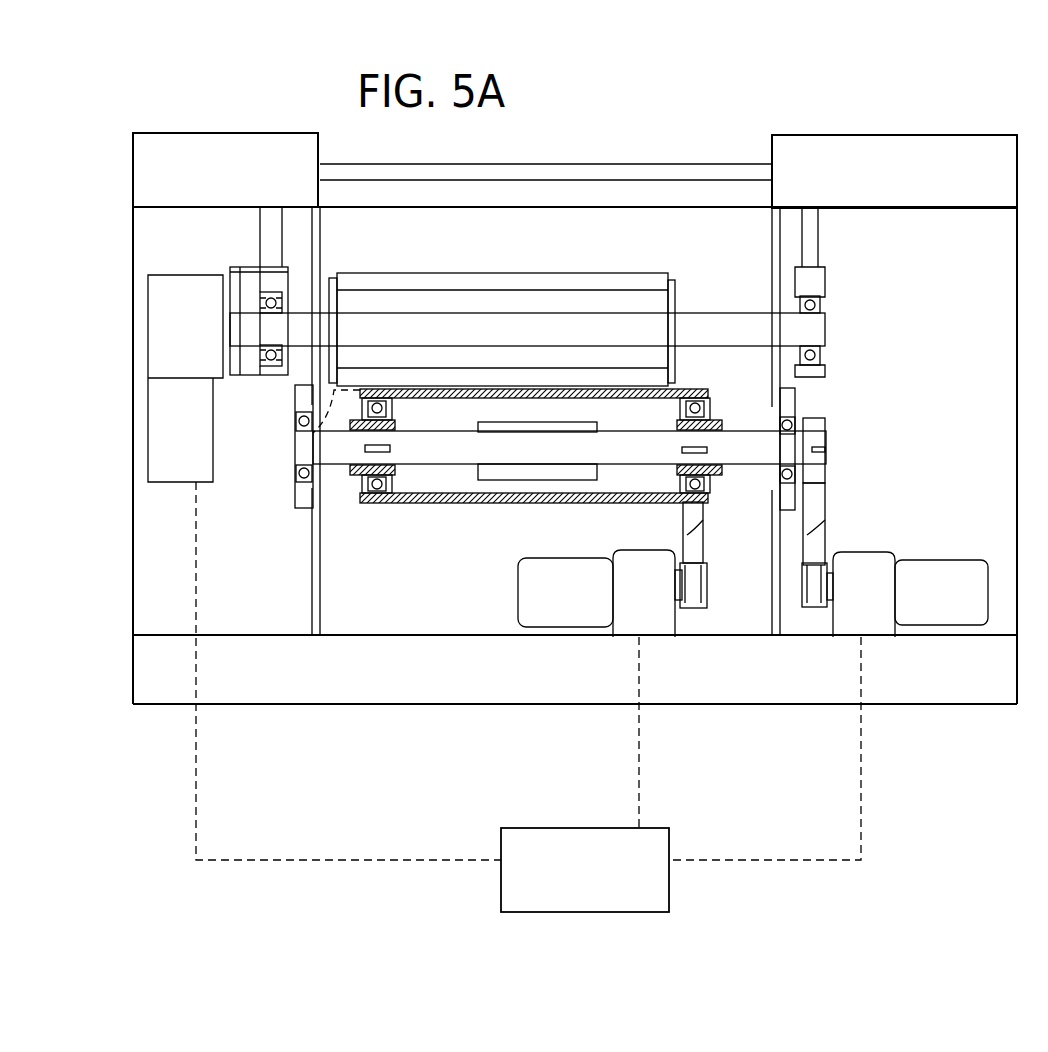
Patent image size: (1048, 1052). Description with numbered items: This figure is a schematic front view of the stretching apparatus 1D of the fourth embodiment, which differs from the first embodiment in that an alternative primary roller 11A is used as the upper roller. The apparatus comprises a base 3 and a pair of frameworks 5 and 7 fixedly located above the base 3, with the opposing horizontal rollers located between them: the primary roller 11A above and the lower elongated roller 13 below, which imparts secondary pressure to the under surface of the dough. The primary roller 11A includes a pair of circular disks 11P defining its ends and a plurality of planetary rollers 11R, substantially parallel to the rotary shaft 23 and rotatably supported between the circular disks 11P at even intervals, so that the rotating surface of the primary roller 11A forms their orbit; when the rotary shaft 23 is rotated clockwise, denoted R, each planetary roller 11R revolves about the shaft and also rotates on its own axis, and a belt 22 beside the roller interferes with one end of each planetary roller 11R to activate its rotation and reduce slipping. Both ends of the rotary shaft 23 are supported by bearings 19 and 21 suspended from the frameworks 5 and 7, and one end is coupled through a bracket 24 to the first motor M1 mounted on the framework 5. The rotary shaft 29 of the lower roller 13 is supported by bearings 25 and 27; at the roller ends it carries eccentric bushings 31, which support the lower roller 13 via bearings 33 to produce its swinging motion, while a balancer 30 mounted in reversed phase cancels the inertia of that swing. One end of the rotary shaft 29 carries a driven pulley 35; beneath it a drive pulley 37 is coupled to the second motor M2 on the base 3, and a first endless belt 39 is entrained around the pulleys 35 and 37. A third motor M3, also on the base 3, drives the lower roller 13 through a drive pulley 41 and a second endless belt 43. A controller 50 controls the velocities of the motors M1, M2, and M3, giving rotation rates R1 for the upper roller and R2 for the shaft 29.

The stretching apparatus 1D is at (778, 120).
The base 3 is at (535, 697).
The framework 5 is at (220, 148).
The framework 7 is at (920, 145).
The primary roller 11A is at (622, 226).
The circular disks 11P is at (333, 283).
The planetary rollers 11R is at (407, 372).
The lower elongated roller 13 is at (443, 503).
The bearing 19 is at (274, 364).
The bearing 21 is at (818, 306).
The belt 22 is at (292, 441).
The rotary shaft 23 is at (483, 324).
The bracket 24 is at (235, 276).
The bearing 25 is at (298, 472).
The bearing 27 is at (778, 504).
The rotary shaft 29 is at (489, 455).
The balancer 30 is at (582, 473).
The eccentric bushings 31 is at (398, 493).
The bearings 33 is at (372, 481).
The driven pulley 35 is at (825, 473).
The drive pulley 37 is at (815, 606).
The first endless belt 39 is at (825, 511).
The drive pulley 41 is at (693, 610).
The second endless belt 43 is at (703, 549).
The controller 50 is at (604, 838).
The first motor M1 is at (170, 469).
The second motor M2 is at (948, 572).
The third motor M3 is at (541, 572).
The clockwise rotation R is at (688, 298).
The rotation rate of upper roller R1 is at (838, 416).
The rotation rate of shaft R2 is at (760, 438).